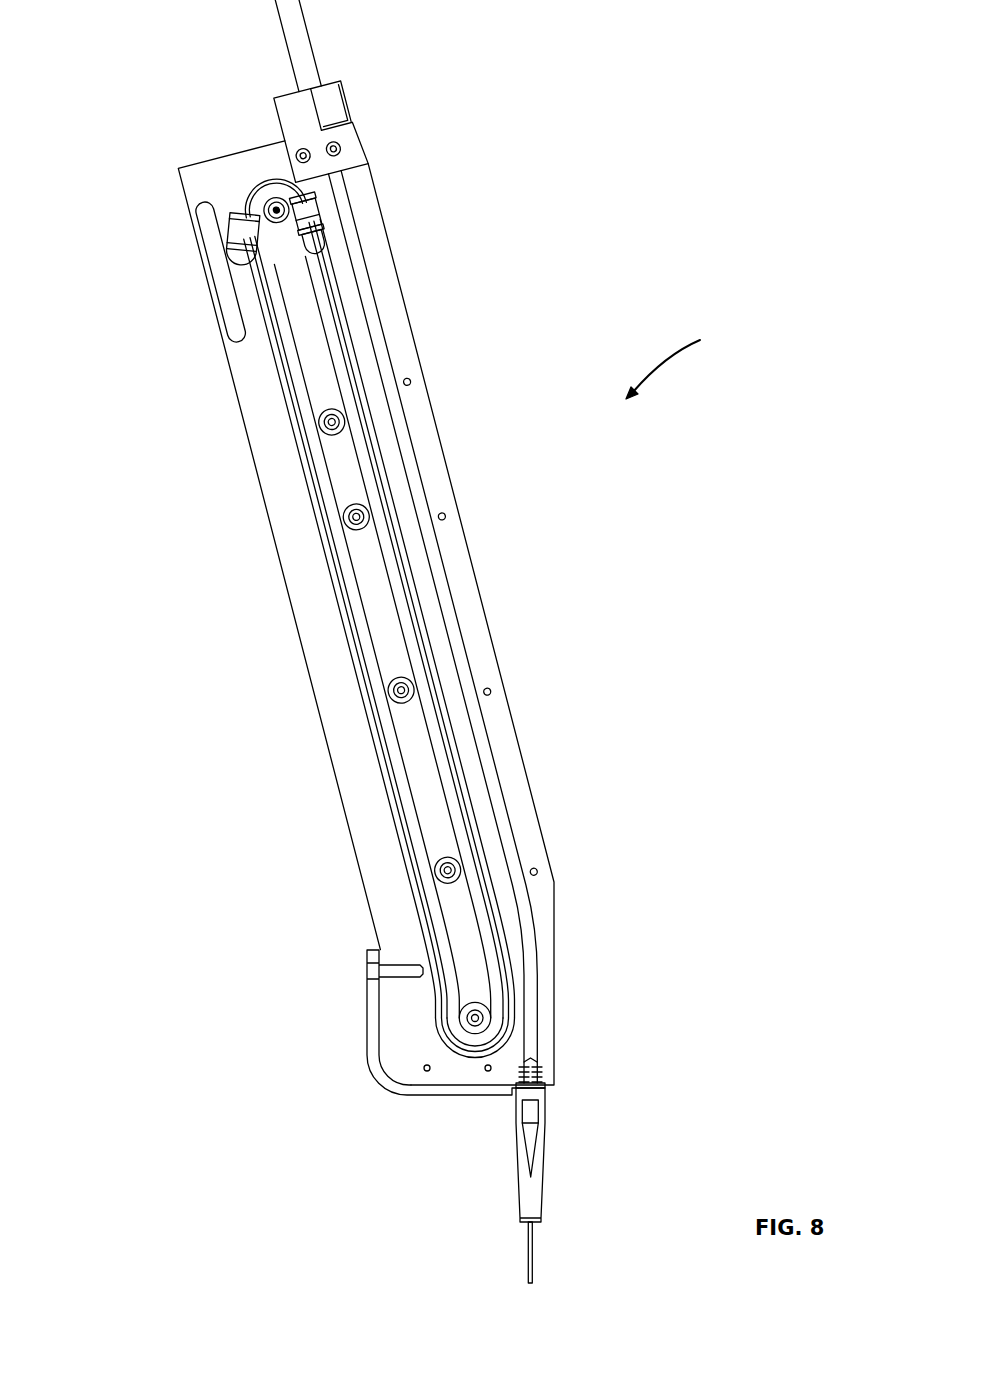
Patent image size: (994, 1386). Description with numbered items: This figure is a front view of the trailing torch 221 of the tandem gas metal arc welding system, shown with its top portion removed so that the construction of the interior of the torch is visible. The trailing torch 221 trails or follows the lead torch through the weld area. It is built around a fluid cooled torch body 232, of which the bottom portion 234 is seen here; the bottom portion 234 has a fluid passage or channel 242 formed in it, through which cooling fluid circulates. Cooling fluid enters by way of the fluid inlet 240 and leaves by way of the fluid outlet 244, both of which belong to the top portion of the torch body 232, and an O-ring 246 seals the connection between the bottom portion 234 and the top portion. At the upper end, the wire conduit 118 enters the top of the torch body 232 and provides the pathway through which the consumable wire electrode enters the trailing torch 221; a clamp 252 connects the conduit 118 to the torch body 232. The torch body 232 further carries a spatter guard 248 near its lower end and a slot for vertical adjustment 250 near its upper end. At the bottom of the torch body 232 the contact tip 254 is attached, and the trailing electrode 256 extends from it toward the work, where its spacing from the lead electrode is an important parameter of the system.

The wire conduit 118 is at (288, 67).
The trailing torch 221 is at (674, 354).
The fluid cooled torch body 232 is at (328, 736).
The bottom portion 234 is at (298, 565).
The fluid inlet 240 is at (240, 232).
The fluid passage 242 is at (278, 395).
The fluid outlet 244 is at (303, 215).
The O-ring 246 is at (343, 351).
The spatter guard 248 is at (376, 1064).
The slot for vertical adjustment 250 is at (228, 302).
The clamp 252 is at (331, 101).
The contact tip 254 is at (546, 1177).
The trailing electrode 256 is at (528, 1272).